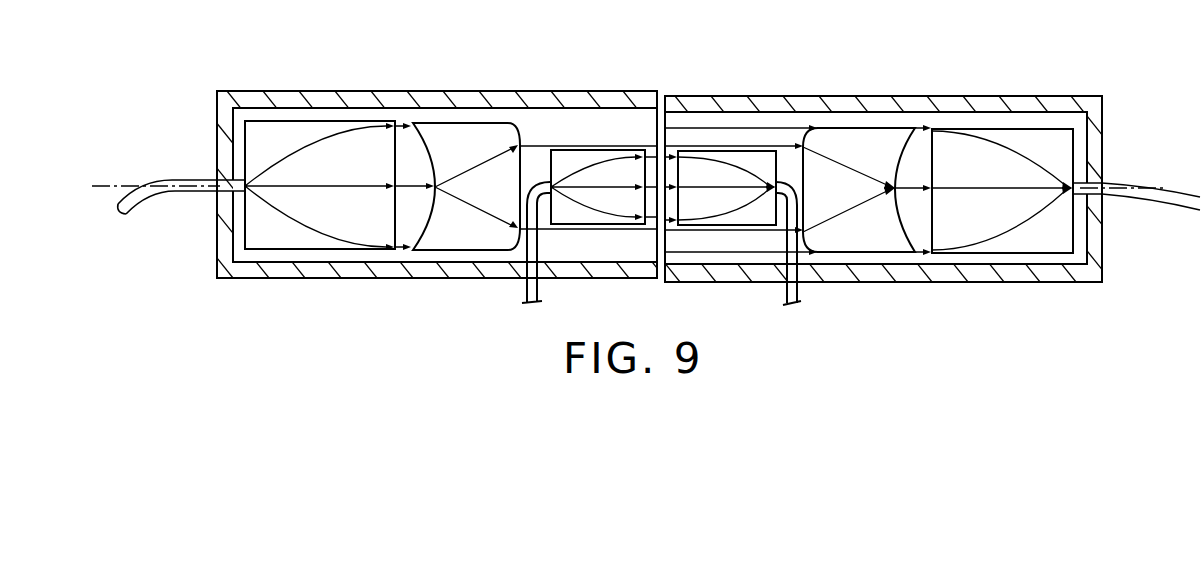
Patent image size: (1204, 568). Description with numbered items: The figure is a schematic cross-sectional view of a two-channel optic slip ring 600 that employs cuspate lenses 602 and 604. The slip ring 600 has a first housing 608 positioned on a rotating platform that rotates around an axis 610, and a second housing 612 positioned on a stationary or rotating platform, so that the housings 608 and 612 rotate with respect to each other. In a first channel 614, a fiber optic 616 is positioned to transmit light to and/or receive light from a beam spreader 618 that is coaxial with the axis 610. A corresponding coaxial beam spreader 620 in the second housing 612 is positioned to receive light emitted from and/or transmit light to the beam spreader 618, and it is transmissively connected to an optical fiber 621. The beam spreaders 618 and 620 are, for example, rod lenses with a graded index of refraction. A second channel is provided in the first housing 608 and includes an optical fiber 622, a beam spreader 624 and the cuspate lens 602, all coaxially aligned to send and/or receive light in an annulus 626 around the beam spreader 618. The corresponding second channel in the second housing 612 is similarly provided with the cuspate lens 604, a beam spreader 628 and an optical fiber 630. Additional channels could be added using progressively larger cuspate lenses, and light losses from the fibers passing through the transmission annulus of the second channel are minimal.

The two-channel optic slip ring 600 is at (466, 82).
The cuspate lens 602 is at (483, 133).
The cuspate lens 604 is at (882, 145).
The first housing 608 is at (255, 98).
The axis 610 is at (120, 185).
The second housing 612 is at (993, 105).
The first channel 614 is at (604, 241).
The fiber optic 616 is at (528, 287).
The beam spreader 618 is at (578, 158).
The beam spreader 620 is at (737, 158).
The optical fiber 621 is at (787, 289).
The optical fiber 622 is at (158, 195).
The beam spreader 624 is at (295, 237).
The annulus 626 is at (770, 140).
The beam spreader 628 is at (1033, 237).
The optical fiber 630 is at (1185, 208).